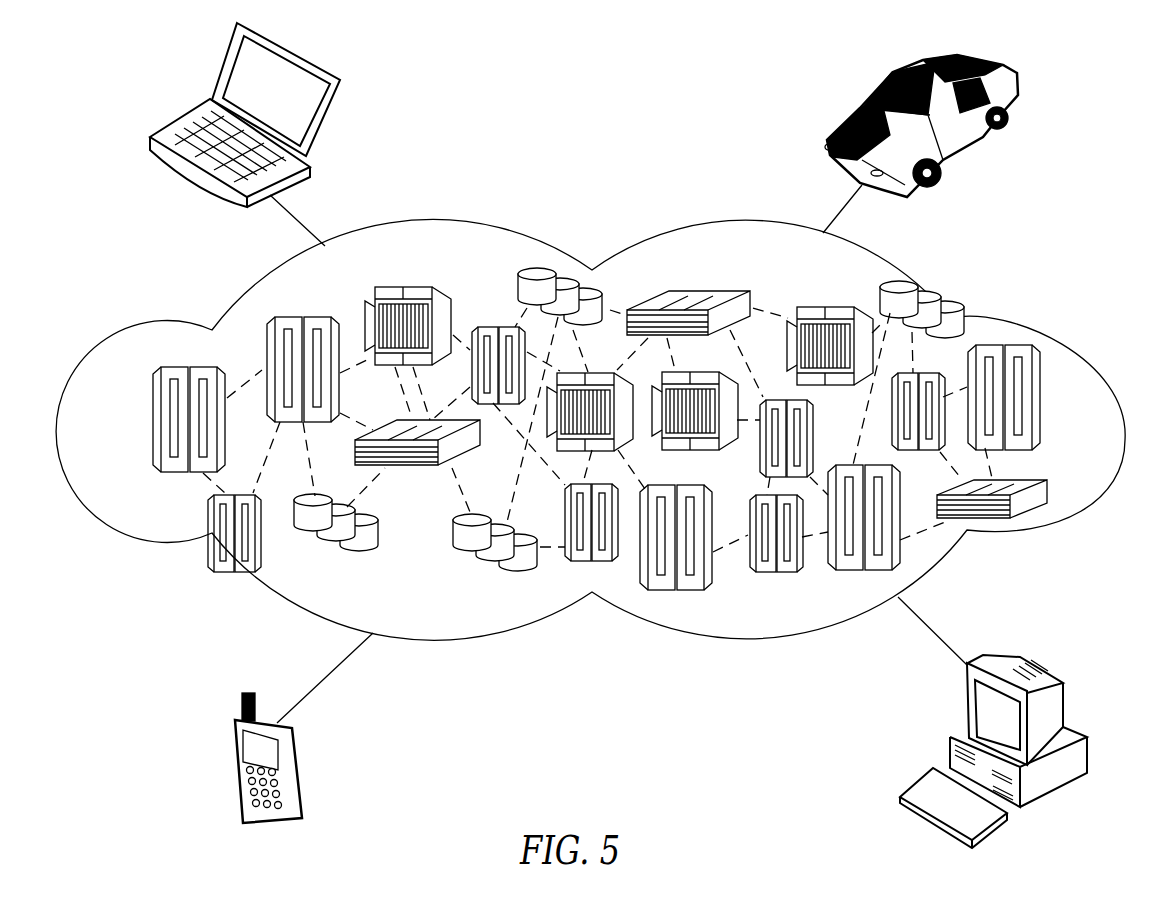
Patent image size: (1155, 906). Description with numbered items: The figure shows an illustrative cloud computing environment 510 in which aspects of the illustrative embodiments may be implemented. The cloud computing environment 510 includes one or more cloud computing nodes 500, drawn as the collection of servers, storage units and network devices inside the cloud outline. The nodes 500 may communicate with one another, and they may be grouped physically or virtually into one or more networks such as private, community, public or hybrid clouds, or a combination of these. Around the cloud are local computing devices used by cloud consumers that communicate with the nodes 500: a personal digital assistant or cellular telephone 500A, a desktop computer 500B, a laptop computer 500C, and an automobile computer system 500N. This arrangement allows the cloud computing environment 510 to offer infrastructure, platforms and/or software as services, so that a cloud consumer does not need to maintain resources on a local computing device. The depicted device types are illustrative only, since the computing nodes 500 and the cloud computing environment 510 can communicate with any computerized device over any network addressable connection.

The personal digital assistant or cellular telephone 500A is at (297, 733).
The desktop computer 500B is at (960, 728).
The laptop computer 500C is at (190, 107).
The automobile computer system 500N is at (850, 120).
The cloud computing environment 510 is at (1072, 334).
The cloud computing nodes 500 is at (1027, 512).